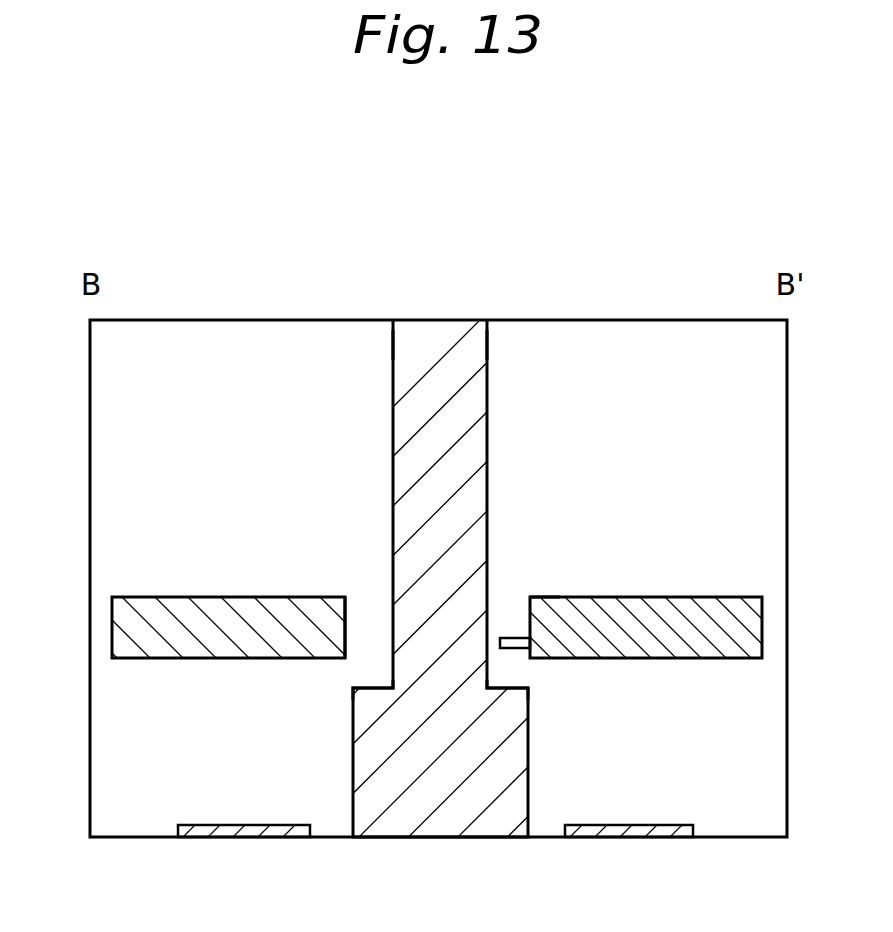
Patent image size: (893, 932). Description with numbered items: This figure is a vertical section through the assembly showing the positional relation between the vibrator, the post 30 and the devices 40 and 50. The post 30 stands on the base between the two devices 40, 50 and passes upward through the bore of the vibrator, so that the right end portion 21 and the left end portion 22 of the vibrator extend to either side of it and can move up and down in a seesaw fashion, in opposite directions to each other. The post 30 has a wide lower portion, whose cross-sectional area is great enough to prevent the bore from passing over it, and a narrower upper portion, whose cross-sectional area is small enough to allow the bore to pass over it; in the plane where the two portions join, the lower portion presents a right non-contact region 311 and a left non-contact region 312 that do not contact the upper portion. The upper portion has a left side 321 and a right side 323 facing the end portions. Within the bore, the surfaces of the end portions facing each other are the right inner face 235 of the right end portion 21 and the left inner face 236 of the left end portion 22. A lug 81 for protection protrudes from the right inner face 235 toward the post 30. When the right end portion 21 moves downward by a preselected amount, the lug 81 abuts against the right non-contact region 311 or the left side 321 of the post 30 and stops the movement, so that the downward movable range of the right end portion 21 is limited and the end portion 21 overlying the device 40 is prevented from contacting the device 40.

The post 30 is at (468, 412).
The right side 323 is at (392, 342).
The left side 321 is at (485, 342).
The left non-contact region 312 is at (353, 677).
The right non-contact region 311 is at (512, 692).
The left end portion 22 is at (120, 603).
The right end portion 21 is at (750, 622).
The left inner face 236 is at (366, 602).
The right inner face 235 is at (528, 600).
The lug 81 is at (512, 633).
The device 50 is at (277, 840).
The device 40 is at (648, 840).